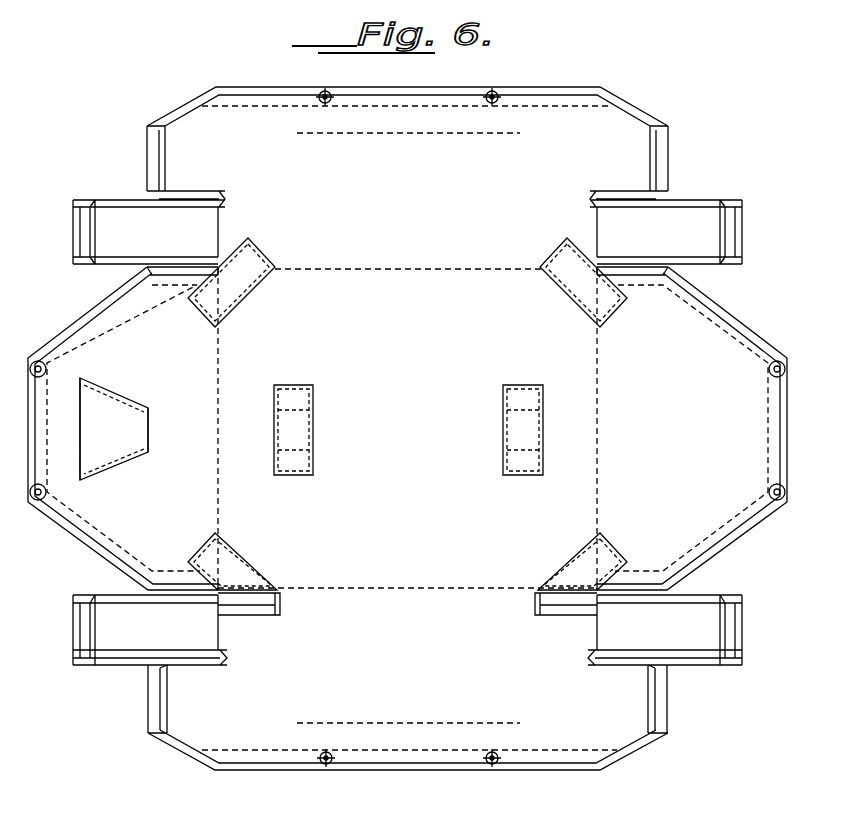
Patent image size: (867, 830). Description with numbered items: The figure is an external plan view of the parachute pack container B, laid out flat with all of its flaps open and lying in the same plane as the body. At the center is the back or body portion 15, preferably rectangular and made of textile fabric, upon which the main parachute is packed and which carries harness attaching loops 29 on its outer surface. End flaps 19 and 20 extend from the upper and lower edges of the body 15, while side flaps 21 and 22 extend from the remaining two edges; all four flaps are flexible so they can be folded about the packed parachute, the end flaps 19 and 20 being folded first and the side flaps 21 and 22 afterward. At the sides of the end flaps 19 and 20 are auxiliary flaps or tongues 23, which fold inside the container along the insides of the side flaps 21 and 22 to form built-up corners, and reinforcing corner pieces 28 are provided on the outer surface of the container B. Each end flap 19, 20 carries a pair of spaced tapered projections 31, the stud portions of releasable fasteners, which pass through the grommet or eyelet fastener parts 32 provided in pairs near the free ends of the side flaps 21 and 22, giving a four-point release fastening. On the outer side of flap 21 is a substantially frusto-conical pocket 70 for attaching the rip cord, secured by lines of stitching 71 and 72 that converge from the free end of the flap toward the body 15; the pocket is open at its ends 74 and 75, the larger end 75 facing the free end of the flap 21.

The back or body portion 15 is at (407, 428).
The end flap 19 is at (577, 127).
The end flap 20 is at (240, 298).
The side flap 21 is at (145, 532).
The side flap 22 is at (720, 515).
The auxiliary flap or tongue 23 is at (117, 217).
The reinforcing corner piece 28 is at (232, 573).
The harness attaching loop 29 is at (300, 429).
The tapered projection 31 is at (325, 104).
The grommet or eyelet fastener part 32 is at (38, 361).
The frusto-conical pocket 70 is at (118, 439).
The stitching 71 is at (118, 390).
The stitching 72 is at (110, 470).
The pocket opening 74 is at (150, 430).
The pocket opening 75 is at (80, 440).
The container B is at (190, 724).